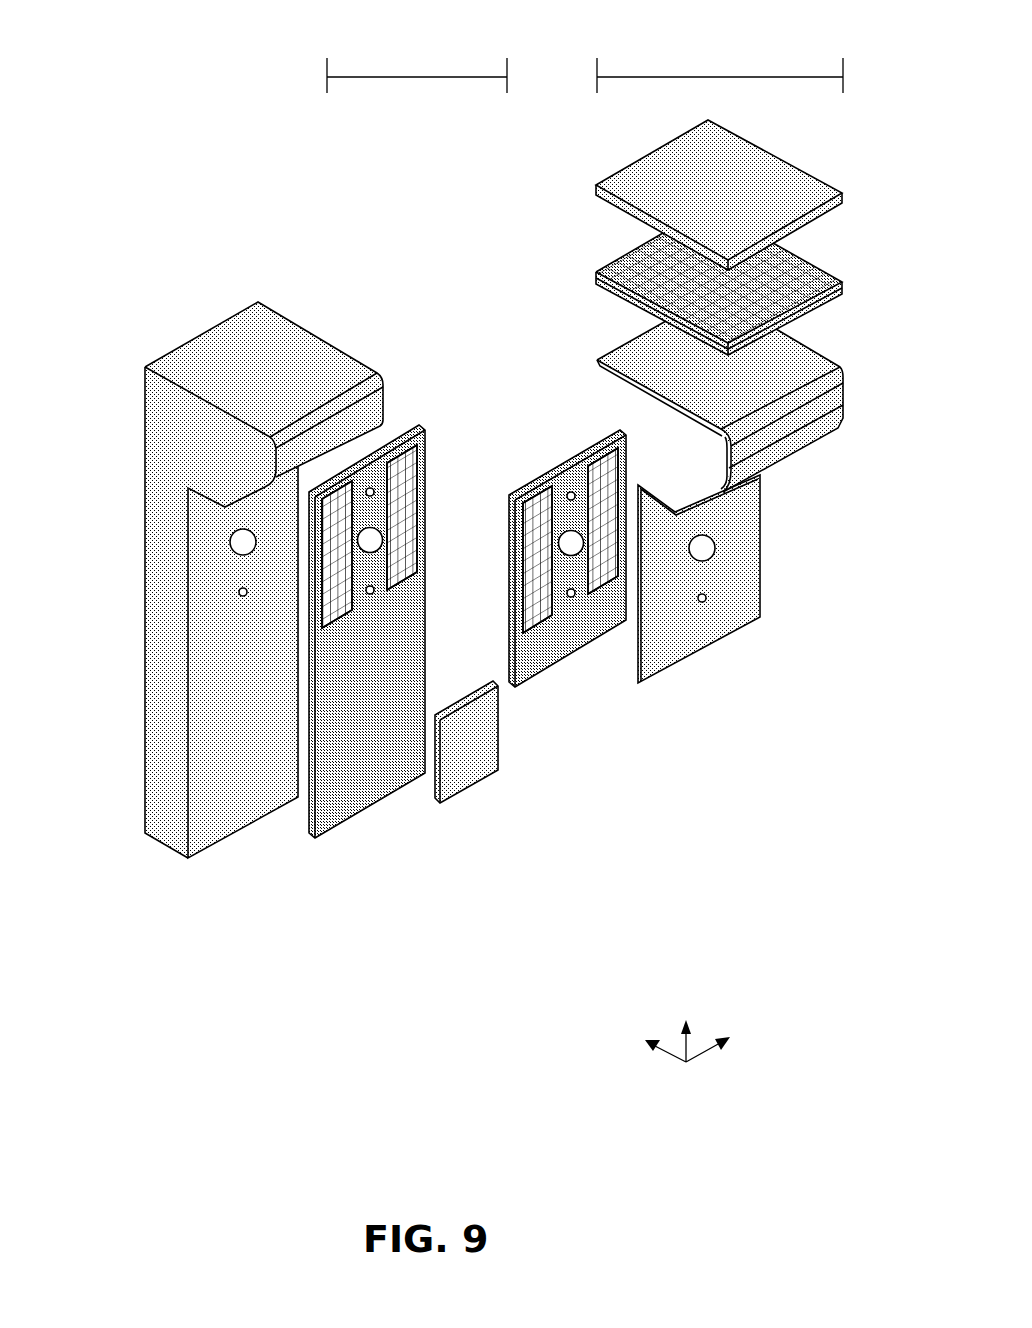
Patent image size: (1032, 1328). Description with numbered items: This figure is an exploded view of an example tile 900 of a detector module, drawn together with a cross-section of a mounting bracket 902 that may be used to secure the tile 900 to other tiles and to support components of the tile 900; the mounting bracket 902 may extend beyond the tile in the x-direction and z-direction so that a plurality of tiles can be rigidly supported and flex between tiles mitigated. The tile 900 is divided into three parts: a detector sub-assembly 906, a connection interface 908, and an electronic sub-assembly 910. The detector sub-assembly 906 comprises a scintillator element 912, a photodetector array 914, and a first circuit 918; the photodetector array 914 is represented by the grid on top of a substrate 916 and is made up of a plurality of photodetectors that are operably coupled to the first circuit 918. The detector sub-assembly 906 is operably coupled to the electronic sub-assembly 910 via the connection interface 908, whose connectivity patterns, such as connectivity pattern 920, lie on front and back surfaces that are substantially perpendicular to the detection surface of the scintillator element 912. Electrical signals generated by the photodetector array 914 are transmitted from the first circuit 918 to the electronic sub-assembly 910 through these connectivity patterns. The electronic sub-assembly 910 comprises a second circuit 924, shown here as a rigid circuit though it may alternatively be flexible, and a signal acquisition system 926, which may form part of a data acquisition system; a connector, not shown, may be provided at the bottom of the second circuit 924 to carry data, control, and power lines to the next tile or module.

The tile 900 is at (147, 36).
The mounting bracket 902 is at (180, 345).
The detector sub-assembly 906 is at (722, 77).
The connection interface 908 is at (540, 475).
The electronic sub-assembly 910 is at (418, 77).
The scintillator element 912 is at (810, 174).
The photodetector array 914 is at (808, 256).
The substrate 916 is at (837, 288).
The first circuit 918 is at (822, 362).
The connectivity pattern 920 is at (542, 625).
The second circuit 924 is at (355, 800).
The signal acquisition system 926 is at (473, 783).